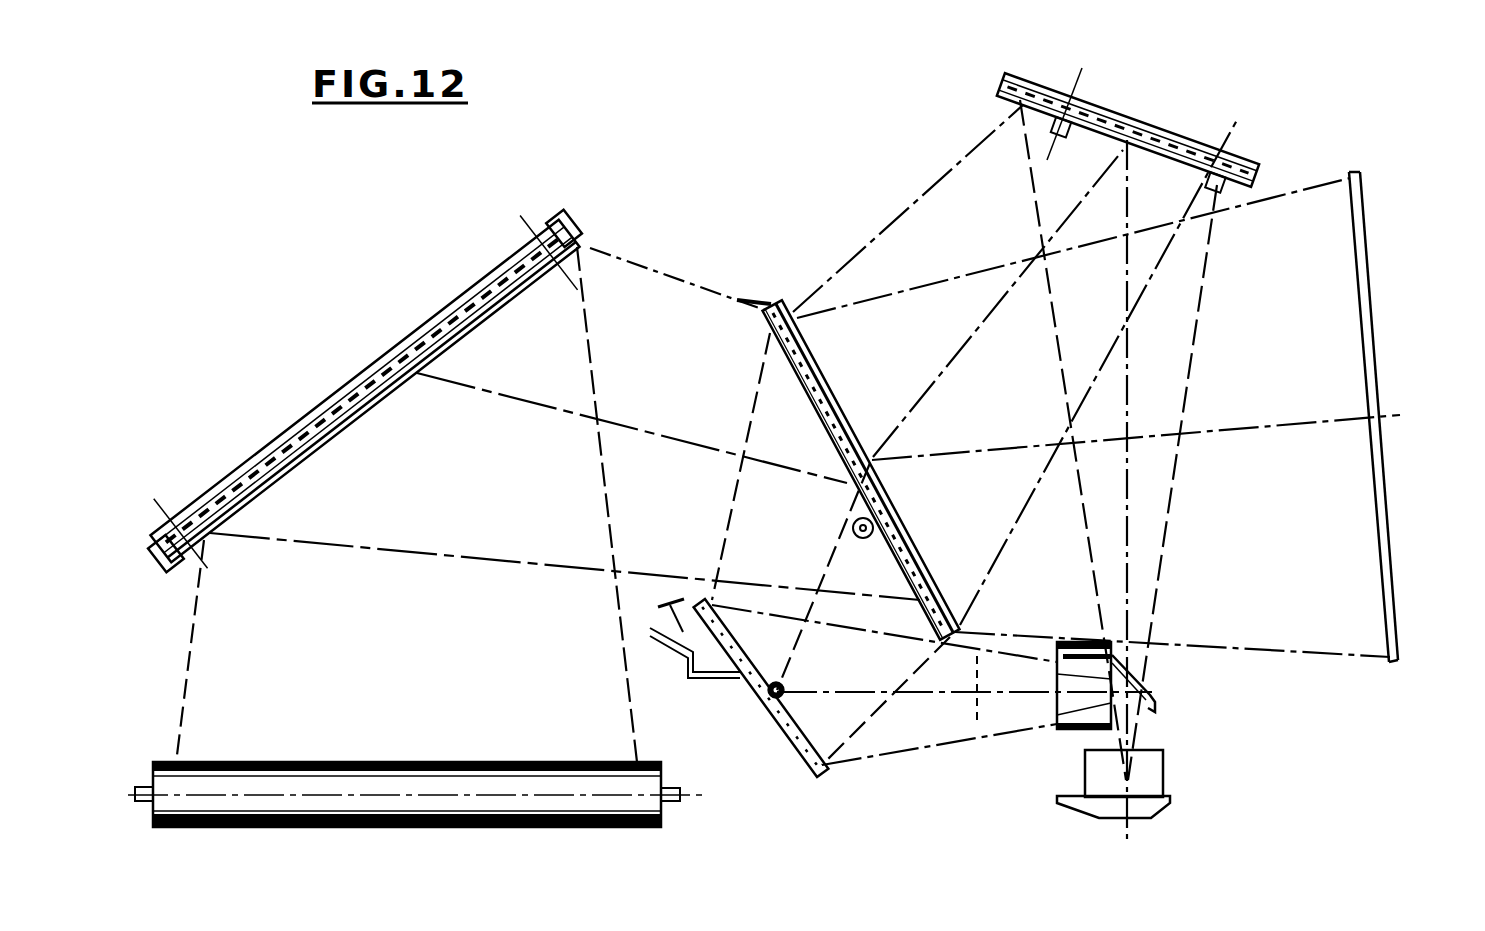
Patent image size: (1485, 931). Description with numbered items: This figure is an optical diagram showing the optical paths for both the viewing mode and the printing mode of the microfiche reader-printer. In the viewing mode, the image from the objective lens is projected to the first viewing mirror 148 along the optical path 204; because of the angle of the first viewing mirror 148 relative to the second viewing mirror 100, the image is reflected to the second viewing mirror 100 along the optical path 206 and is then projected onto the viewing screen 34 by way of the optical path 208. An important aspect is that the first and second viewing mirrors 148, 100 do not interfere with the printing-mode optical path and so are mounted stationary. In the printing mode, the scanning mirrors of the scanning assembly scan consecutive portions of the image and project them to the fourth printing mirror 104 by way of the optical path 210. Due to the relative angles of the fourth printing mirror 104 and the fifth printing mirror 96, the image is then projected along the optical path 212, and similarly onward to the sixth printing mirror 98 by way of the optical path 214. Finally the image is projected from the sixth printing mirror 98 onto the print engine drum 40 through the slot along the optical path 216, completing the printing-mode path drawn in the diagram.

The viewing screen 34 is at (1372, 306).
The print engine drum 40 is at (660, 826).
The fifth printing mirror 96 is at (793, 393).
The sixth printing mirror 98 is at (356, 419).
The second viewing mirror 100 is at (895, 515).
The fourth printing mirror 104 is at (852, 753).
The first viewing mirror 148 is at (1100, 138).
The optical path 204 is at (1130, 488).
The optical path 206 is at (893, 220).
The optical path 208 is at (1280, 196).
The optical path 210 is at (1000, 655).
The optical path 212 is at (727, 572).
The optical path 214 is at (633, 266).
The optical path 216 is at (190, 666).